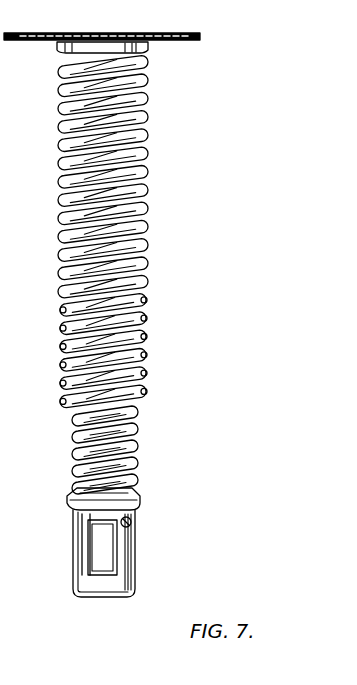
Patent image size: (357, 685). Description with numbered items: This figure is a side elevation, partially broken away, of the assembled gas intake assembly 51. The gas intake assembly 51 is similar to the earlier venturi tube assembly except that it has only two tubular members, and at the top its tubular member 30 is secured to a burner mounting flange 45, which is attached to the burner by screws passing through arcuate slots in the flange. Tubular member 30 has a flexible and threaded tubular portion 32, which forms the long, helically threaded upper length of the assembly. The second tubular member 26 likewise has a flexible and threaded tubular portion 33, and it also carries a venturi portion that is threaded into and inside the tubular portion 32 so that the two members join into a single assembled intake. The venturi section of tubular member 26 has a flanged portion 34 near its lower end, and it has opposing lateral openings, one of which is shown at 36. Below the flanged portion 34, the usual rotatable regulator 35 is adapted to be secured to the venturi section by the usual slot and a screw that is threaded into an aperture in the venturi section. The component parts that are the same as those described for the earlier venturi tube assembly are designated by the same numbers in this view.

The burner mounting flange 45 is at (200, 35).
The tubular member 30 is at (148, 98).
The flexible and threaded tubular portion 32 is at (147, 124).
The gas intake assembly 51 is at (152, 172).
The flexible and threaded tubular portion 33 is at (136, 409).
The tubular member 26 is at (72, 438).
The flanged portion 34 is at (137, 494).
The rotatable regulator 35 is at (130, 566).
The lateral opening 36 is at (96, 553).